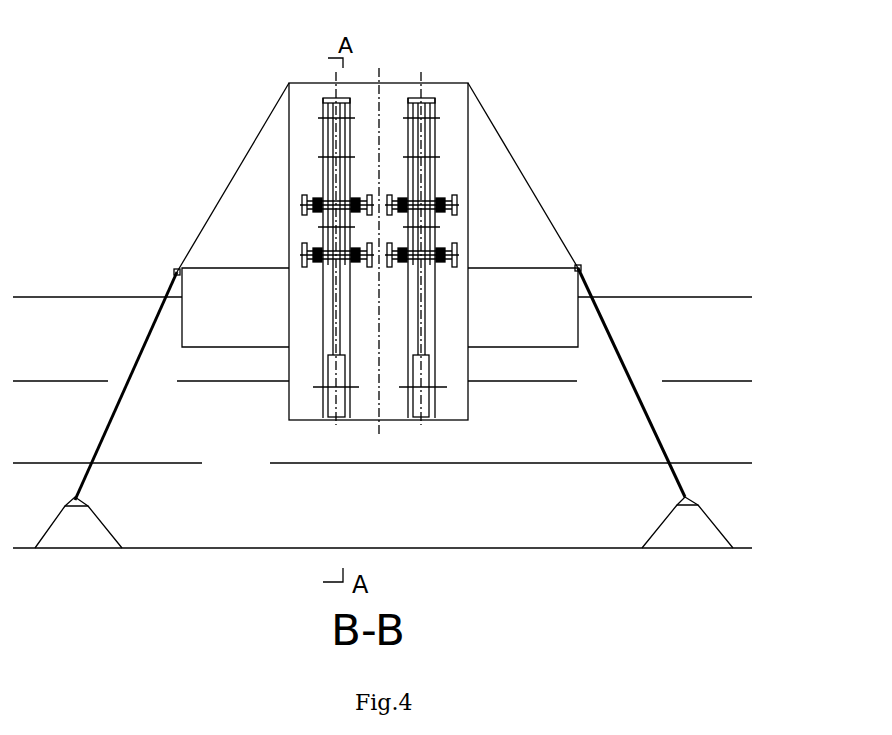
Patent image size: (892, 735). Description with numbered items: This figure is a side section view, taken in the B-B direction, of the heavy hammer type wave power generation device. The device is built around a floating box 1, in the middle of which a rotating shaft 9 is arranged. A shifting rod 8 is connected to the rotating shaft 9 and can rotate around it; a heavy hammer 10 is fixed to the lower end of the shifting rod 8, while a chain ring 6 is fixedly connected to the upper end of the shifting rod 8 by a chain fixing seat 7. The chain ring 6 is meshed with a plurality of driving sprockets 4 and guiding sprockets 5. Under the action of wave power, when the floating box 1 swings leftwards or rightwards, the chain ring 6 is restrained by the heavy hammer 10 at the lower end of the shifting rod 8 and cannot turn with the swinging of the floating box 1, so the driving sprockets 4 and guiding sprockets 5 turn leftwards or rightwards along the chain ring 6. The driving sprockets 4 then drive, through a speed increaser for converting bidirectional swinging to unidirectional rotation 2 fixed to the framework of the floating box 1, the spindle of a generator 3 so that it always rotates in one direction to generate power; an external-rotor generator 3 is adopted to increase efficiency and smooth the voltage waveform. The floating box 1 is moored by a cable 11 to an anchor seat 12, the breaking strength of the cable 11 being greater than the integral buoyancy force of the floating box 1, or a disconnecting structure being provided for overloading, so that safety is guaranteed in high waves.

The floating box 1 is at (245, 292).
The speed increaser for converting bidirectional swinging to unidirectional rotation 2 is at (301, 205).
The generator 3 is at (318, 203).
The driving sprockets 4 is at (320, 192).
The guiding sprockets 5 is at (322, 157).
The chain ring 6 is at (322, 123).
The chain fixing seat 7 is at (320, 97).
The shifting rod 8 is at (327, 98).
The rotating shaft 9 is at (350, 255).
The heavy hammer 10 is at (332, 420).
The cable 11 is at (125, 402).
The anchor seat 12 is at (82, 525).